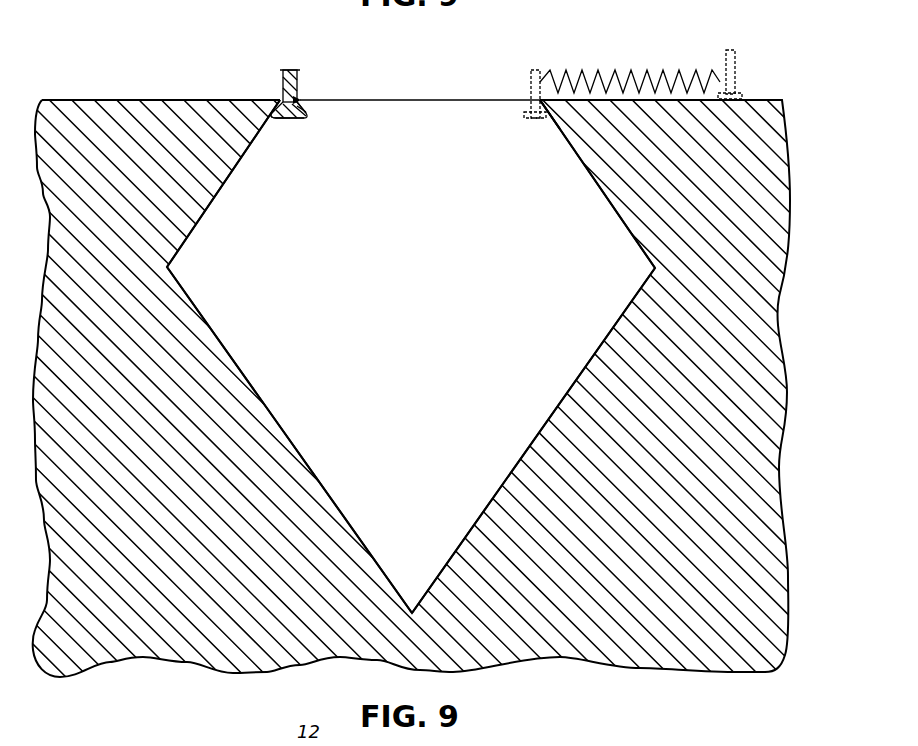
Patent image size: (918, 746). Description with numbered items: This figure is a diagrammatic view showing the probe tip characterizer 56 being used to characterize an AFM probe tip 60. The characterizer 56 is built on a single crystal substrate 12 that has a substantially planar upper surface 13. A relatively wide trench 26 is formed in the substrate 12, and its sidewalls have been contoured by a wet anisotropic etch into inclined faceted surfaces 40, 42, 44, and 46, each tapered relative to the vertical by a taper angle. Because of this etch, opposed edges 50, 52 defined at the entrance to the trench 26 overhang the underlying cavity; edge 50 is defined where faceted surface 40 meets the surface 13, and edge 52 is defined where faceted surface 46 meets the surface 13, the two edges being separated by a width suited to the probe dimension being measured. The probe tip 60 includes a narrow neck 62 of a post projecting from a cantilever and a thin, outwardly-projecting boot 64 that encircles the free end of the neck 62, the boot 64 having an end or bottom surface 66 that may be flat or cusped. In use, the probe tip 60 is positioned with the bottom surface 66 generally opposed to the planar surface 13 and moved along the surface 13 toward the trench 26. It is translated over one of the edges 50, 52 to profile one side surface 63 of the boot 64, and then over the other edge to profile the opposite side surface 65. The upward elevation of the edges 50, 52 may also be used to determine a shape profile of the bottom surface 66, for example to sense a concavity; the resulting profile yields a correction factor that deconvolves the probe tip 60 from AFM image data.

The single crystal substrate 12 is at (103, 118).
The planar upper surface 13 is at (181, 100).
The trench 26 is at (411, 356).
The faceted surface 40 is at (226, 182).
The faceted surface 42 is at (270, 409).
The faceted surface 44 is at (545, 425).
The faceted surface 46 is at (598, 172).
The edge 50 is at (280, 108).
The edge 52 is at (536, 112).
The characterizer 56 is at (130, 40).
The AFM probe tip 60 is at (300, 82).
The neck 62 is at (292, 69).
The side surface 63 is at (268, 121).
The boot 64 is at (312, 112).
The side surface 65 is at (301, 121).
The bottom surface 66 is at (283, 124).